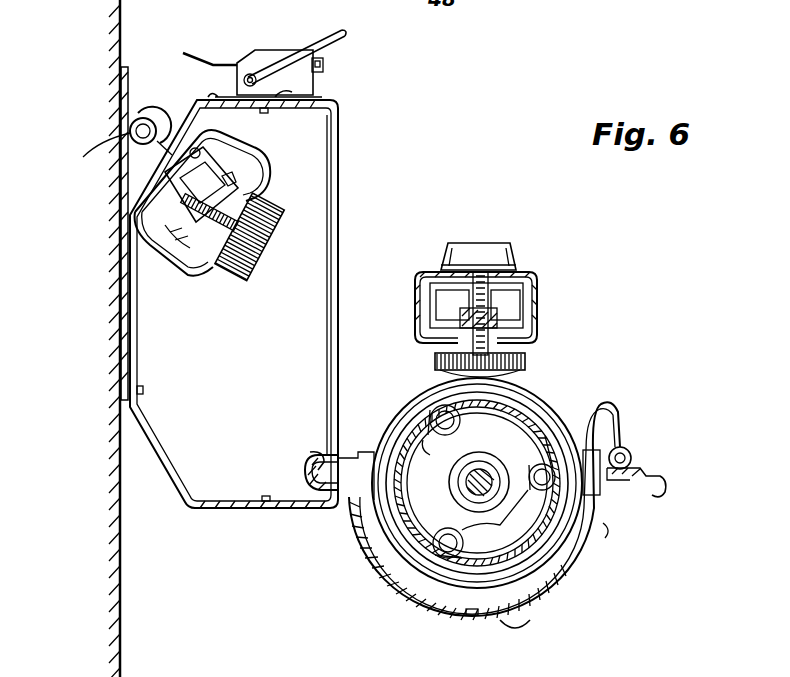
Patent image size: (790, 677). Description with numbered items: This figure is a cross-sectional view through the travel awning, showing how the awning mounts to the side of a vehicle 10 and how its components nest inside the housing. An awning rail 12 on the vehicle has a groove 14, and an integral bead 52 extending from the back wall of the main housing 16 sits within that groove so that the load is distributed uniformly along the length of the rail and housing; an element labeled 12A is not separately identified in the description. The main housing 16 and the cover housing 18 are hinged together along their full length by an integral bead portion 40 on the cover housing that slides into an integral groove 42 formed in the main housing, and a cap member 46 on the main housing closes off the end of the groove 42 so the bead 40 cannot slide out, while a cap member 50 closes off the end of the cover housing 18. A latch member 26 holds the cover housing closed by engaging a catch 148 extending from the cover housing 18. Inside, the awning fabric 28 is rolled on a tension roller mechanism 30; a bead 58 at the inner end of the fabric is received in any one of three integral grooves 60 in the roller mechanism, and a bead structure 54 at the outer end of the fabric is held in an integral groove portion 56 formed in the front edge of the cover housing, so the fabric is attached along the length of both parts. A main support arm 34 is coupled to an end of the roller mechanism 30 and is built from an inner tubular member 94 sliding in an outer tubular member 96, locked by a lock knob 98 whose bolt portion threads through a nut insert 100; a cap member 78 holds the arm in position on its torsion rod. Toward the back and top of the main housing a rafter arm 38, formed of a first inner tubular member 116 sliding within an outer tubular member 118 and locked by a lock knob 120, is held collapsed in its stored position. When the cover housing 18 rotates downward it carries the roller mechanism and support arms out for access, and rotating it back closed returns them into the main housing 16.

The vehicle 10 is at (115, 38).
The awning rail 12 is at (122, 185).
The latch assembly 12A is at (238, 162).
The groove 14 is at (147, 117).
The main housing 16 is at (340, 116).
The cover housing 18 is at (573, 580).
The latch member 26 is at (274, 60).
The awning fabric 28 is at (578, 418).
The tension roller mechanism 30 is at (520, 408).
The main support arm 34 is at (542, 330).
The rafter arm 38 is at (232, 190).
The integral bead portion 40 is at (304, 471).
The integral groove 42 is at (308, 455).
The cap member 46 is at (310, 256).
The cap member 50 is at (526, 614).
The integral bead 52 is at (96, 162).
The bead structure 54 is at (628, 452).
The integral groove portion 56 is at (634, 462).
The bead 58 is at (430, 432).
The integral grooves 60 is at (432, 440).
The cap member 78 is at (490, 247).
The inner tubular member 94 is at (540, 302).
The outer tubular member 96 is at (525, 273).
The lock knob 98 is at (436, 362).
The nut insert 100 is at (540, 316).
The first inner tubular member 116 is at (180, 250).
The outer tubular member 118 is at (200, 262).
The lock knob 120 is at (262, 256).
The catch 148 is at (672, 488).